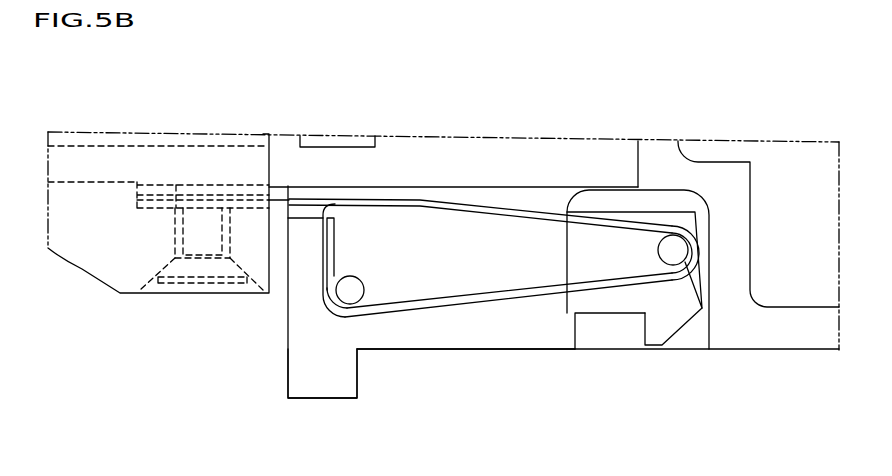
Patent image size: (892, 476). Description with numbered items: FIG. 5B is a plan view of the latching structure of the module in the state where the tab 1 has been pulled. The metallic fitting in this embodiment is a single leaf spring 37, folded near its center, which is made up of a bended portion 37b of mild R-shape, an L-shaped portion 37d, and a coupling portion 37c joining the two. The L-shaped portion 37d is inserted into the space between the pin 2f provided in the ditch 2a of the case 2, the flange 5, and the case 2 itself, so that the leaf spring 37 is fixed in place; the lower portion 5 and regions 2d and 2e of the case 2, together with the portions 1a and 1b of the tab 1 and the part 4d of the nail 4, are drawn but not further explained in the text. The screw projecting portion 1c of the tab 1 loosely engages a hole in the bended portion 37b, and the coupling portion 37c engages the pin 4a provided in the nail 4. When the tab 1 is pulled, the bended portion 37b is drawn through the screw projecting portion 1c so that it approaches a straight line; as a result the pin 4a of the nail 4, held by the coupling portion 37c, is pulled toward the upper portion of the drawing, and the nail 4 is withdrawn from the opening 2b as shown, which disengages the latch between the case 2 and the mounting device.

The tab 1 is at (92, 252).
The first engagement portion 1a is at (217, 295).
The second engagement portion 1b is at (165, 297).
The screw projecting portion 1c is at (190, 182).
The case 2 is at (380, 335).
The ditch 2a is at (460, 263).
The opening 2b is at (590, 340).
The guide plate 2d is at (310, 188).
The engaging portion 2e is at (88, 181).
The pin 2f is at (356, 280).
The nail 4 is at (620, 295).
The pin 4a is at (657, 250).
The arm portion 4d is at (667, 330).
The flange 5 is at (313, 392).
The leaf spring 37 is at (510, 212).
The bended portion 37b is at (423, 198).
The coupling portion 37c is at (698, 338).
The L-shaped portion 37d is at (465, 305).